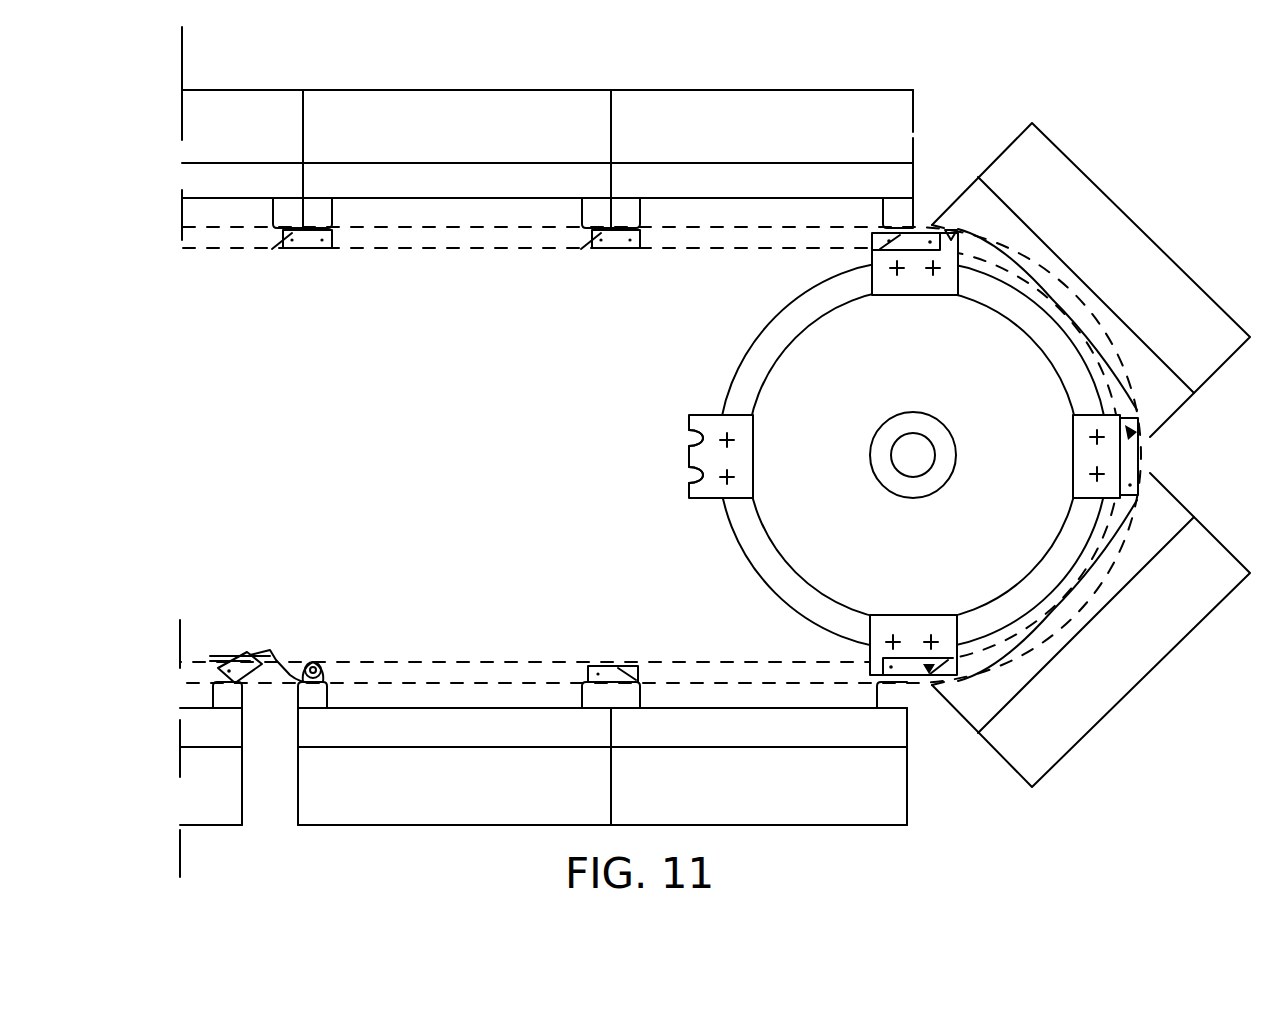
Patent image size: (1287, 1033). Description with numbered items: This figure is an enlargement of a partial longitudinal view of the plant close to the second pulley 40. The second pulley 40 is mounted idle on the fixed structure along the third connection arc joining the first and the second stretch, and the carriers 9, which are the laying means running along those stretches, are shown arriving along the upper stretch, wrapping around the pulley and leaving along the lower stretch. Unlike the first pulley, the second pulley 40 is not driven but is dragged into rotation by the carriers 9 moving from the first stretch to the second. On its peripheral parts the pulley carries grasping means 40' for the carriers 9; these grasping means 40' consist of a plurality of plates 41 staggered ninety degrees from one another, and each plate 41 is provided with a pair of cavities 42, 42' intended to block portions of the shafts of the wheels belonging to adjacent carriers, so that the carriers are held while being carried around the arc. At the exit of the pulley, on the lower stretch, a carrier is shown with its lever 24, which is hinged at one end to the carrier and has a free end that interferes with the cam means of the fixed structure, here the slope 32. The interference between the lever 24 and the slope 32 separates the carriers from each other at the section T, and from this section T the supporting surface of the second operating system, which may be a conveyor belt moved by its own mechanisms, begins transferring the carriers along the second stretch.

The carrier 9 is at (468, 186).
The second pulley 40 is at (895, 455).
The grasping means 40' is at (856, 452).
The plate 41 is at (898, 298).
The cavity 42 is at (647, 501).
The cavity 42' is at (643, 428).
The lever 24 is at (222, 655).
The section T is at (264, 642).
The slope 32 is at (272, 668).